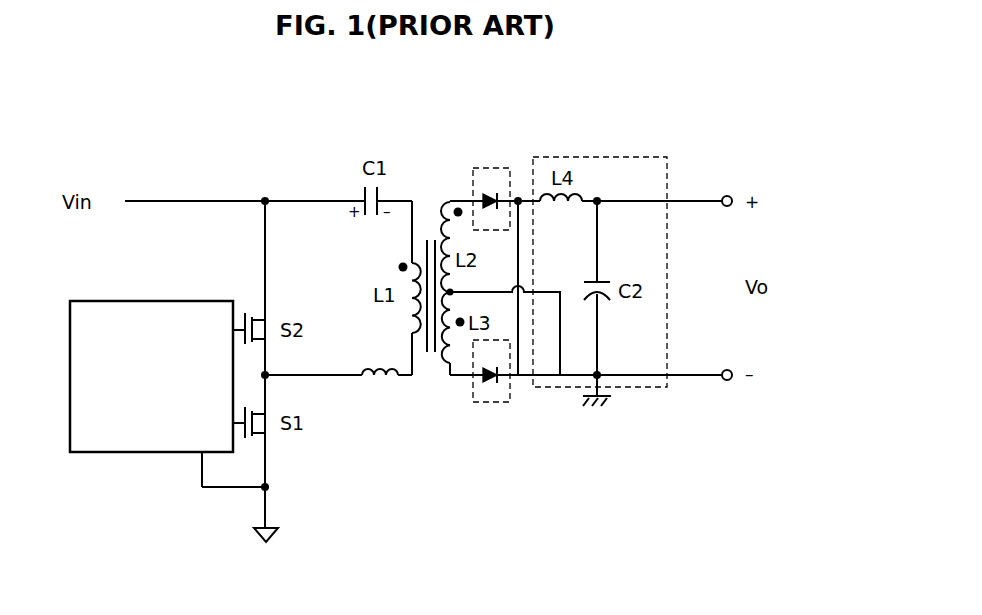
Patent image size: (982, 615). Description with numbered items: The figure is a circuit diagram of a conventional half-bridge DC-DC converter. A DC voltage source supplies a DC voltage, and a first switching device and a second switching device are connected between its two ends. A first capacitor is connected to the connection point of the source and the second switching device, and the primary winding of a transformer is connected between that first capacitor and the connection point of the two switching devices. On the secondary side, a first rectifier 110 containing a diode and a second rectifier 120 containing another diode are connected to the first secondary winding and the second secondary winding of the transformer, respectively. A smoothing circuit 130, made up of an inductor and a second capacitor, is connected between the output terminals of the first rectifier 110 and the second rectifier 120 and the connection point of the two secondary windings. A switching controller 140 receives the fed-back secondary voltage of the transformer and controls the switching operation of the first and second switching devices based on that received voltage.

The first rectifier 110 is at (473, 177).
The second rectifier 120 is at (495, 402).
The smoothing circuit 130 is at (602, 157).
The switching controller 140 is at (147, 300).